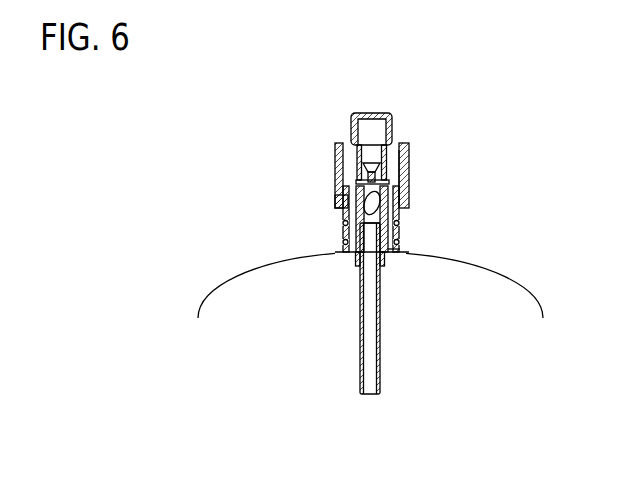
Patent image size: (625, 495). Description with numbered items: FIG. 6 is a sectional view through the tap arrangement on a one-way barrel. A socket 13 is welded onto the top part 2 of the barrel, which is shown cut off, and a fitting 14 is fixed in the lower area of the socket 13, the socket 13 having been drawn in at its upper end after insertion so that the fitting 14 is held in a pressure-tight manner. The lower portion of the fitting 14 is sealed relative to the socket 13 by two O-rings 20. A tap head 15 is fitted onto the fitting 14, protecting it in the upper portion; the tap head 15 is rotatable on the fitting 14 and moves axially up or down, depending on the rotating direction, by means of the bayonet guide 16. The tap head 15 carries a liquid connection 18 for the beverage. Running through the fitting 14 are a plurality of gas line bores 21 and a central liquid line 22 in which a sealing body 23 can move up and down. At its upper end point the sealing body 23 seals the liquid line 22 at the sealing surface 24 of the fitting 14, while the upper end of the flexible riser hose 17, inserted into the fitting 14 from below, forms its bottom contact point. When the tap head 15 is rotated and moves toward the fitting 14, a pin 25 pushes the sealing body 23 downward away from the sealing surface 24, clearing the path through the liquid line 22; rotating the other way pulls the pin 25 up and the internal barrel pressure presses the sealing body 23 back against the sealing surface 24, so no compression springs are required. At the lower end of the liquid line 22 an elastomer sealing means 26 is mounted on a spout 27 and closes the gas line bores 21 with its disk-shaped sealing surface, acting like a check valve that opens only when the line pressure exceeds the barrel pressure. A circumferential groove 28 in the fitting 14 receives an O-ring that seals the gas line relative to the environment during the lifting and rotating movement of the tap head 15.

The top part 2 is at (490, 275).
The socket 13 is at (399, 246).
The fitting 14 is at (392, 215).
The tap head 15 is at (407, 143).
The bayonet guide 16 is at (333, 192).
The riser hose 17 is at (380, 352).
The liquid connection 18 is at (376, 124).
The O-rings 20 is at (344, 224).
The gas line bores 21 is at (348, 207).
The liquid line 22 is at (382, 205).
The sealing body 23 is at (405, 162).
The sealing surface 24 is at (343, 176).
The pin 25 is at (348, 140).
The sealing means 26 is at (385, 258).
The spout 27 is at (358, 266).
The circumferential groove 28 is at (337, 167).